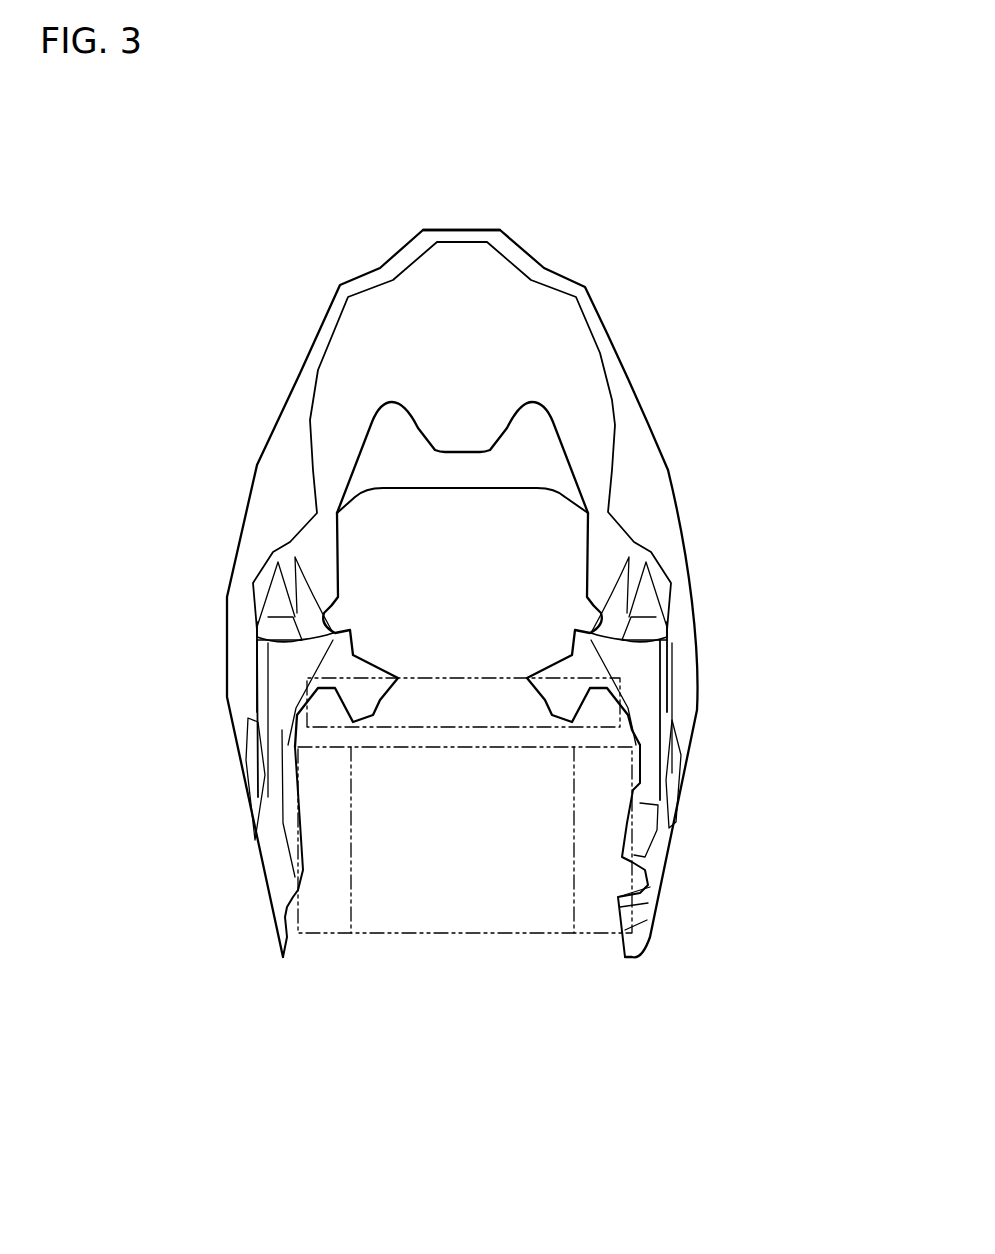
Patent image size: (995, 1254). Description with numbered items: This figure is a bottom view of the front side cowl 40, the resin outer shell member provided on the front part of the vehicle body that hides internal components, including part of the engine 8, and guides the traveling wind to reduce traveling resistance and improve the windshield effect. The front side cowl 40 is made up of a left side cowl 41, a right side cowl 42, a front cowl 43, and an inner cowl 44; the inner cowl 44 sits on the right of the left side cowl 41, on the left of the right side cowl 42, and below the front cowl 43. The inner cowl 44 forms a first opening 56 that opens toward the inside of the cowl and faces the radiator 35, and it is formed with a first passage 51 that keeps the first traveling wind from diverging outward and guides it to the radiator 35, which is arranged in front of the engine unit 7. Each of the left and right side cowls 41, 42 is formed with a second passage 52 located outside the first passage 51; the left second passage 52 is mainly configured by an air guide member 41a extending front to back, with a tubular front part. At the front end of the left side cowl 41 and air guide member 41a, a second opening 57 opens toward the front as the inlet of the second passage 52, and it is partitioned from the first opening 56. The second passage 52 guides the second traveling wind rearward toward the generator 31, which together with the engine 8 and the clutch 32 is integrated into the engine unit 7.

The engine unit 7 is at (515, 942).
The engine 8 is at (422, 933).
The generator 31 is at (337, 930).
The clutch 32 is at (603, 930).
The radiator 35 is at (465, 728).
The front side cowl 40 is at (388, 228).
The left side cowl 41 is at (217, 720).
The air guide member 41a is at (275, 665).
The right side cowl 42 is at (733, 713).
The front cowl 43 is at (462, 237).
The inner cowl 44 is at (583, 412).
The first passage 51 is at (565, 528).
The second passage 52 is at (268, 628).
The first opening 56 is at (580, 291).
The second opening 57 is at (278, 590).